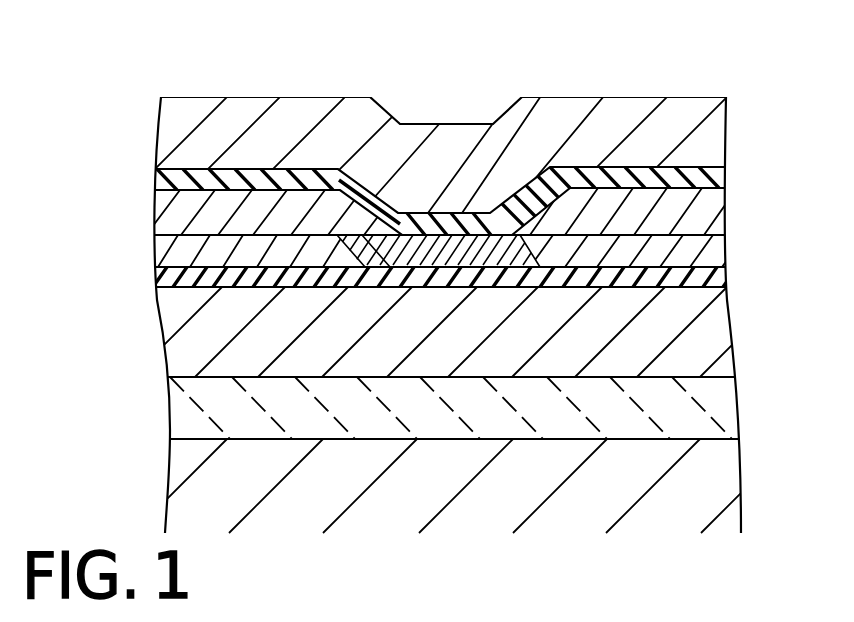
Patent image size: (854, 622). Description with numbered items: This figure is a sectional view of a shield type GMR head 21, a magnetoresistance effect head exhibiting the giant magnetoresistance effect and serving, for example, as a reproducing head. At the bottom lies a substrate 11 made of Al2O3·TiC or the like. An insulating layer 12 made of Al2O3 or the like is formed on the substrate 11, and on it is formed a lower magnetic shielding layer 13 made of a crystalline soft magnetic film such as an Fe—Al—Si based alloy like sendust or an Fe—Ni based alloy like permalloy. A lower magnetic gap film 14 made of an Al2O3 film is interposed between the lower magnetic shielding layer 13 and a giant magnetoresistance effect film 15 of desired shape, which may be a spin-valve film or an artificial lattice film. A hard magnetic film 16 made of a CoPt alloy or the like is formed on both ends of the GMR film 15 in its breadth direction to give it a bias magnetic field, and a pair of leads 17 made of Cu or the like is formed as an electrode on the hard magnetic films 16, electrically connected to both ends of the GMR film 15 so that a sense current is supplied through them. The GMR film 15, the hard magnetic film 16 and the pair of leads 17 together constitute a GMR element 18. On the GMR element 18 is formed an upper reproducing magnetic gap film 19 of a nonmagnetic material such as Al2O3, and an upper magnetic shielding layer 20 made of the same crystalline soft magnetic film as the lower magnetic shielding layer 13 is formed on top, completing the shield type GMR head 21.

The substrate 11 is at (722, 489).
The insulating layer 12 is at (723, 408).
The lower magnetic shielding layer 13 is at (720, 333).
The lower magnetic gap film 14 is at (722, 280).
The giant magnetoresistance effect film 15 is at (400, 256).
The hard magnetic film 16 is at (760, 240).
The pair of leads 17 is at (760, 200).
The GMR element 18 is at (88, 193).
The upper reproducing magnetic gap film 19 is at (722, 175).
The upper magnetic shielding layer 20 is at (710, 127).
The shield type GMR head 21 is at (660, 72).